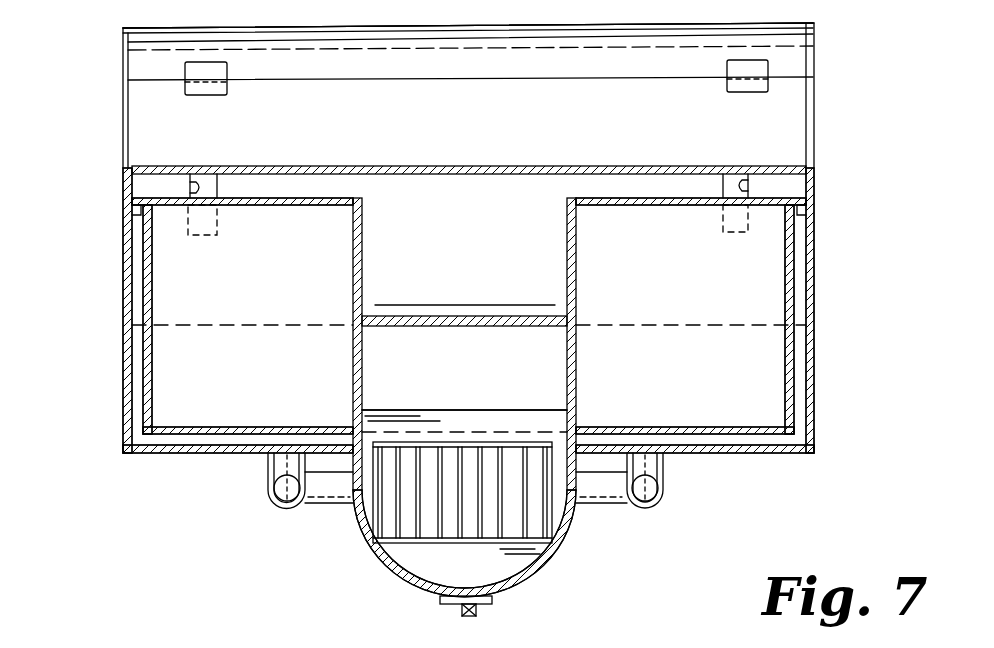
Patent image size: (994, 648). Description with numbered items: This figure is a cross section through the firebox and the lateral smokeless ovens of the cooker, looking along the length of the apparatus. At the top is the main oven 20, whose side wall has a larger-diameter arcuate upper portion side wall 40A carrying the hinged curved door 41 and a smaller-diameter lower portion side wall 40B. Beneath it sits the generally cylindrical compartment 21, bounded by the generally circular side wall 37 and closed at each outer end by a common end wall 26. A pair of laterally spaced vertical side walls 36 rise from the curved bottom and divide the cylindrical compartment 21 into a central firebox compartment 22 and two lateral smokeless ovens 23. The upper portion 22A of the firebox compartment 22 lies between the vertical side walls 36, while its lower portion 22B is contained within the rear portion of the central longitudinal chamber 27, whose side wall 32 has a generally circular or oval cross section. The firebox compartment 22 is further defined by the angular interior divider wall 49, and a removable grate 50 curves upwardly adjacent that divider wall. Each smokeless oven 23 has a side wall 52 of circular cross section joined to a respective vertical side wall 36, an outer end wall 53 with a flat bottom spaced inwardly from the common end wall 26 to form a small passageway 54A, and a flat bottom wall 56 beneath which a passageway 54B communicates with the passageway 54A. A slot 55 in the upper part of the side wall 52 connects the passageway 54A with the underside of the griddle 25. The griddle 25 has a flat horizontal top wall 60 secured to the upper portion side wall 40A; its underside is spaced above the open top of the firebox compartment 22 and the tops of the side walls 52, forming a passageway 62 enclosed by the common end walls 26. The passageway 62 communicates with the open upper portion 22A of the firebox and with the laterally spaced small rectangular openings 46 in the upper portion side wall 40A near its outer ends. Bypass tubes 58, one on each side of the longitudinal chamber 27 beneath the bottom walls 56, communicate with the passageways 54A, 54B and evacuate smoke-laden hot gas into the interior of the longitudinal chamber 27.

The main oven 20 is at (478, 121).
The generally cylindrical compartment 21 is at (82, 304).
The firebox compartment 22 is at (485, 361).
The upper portion of the firebox compartment 22A is at (480, 255).
The lower portion of the firebox compartment 22B is at (485, 578).
The smokeless oven 23 is at (268, 297).
The griddle 25 is at (594, 149).
The common end wall 26 is at (123, 242).
The central longitudinal chamber 27 is at (372, 555).
The side wall 32 is at (547, 570).
The vertical side walls 36 is at (362, 266).
The side wall 37 is at (160, 454).
The upper portion side wall 40A is at (378, 138).
The lower portion side wall 40B is at (432, 396).
The curved door 41 is at (618, 38).
The small rectangular openings 46 is at (190, 183).
The interior divider wall 49 is at (472, 425).
The grate 50 is at (405, 555).
The side wall 52 is at (280, 206).
The end wall 53 is at (152, 373).
The passageway 54A is at (137, 362).
The passageway 54B is at (190, 441).
The slot 55 is at (132, 216).
The bottom wall 56 is at (246, 427).
The bypass tubes 58 is at (280, 494).
The horizontal top wall 60 is at (497, 166).
The passageway 62 is at (284, 190).